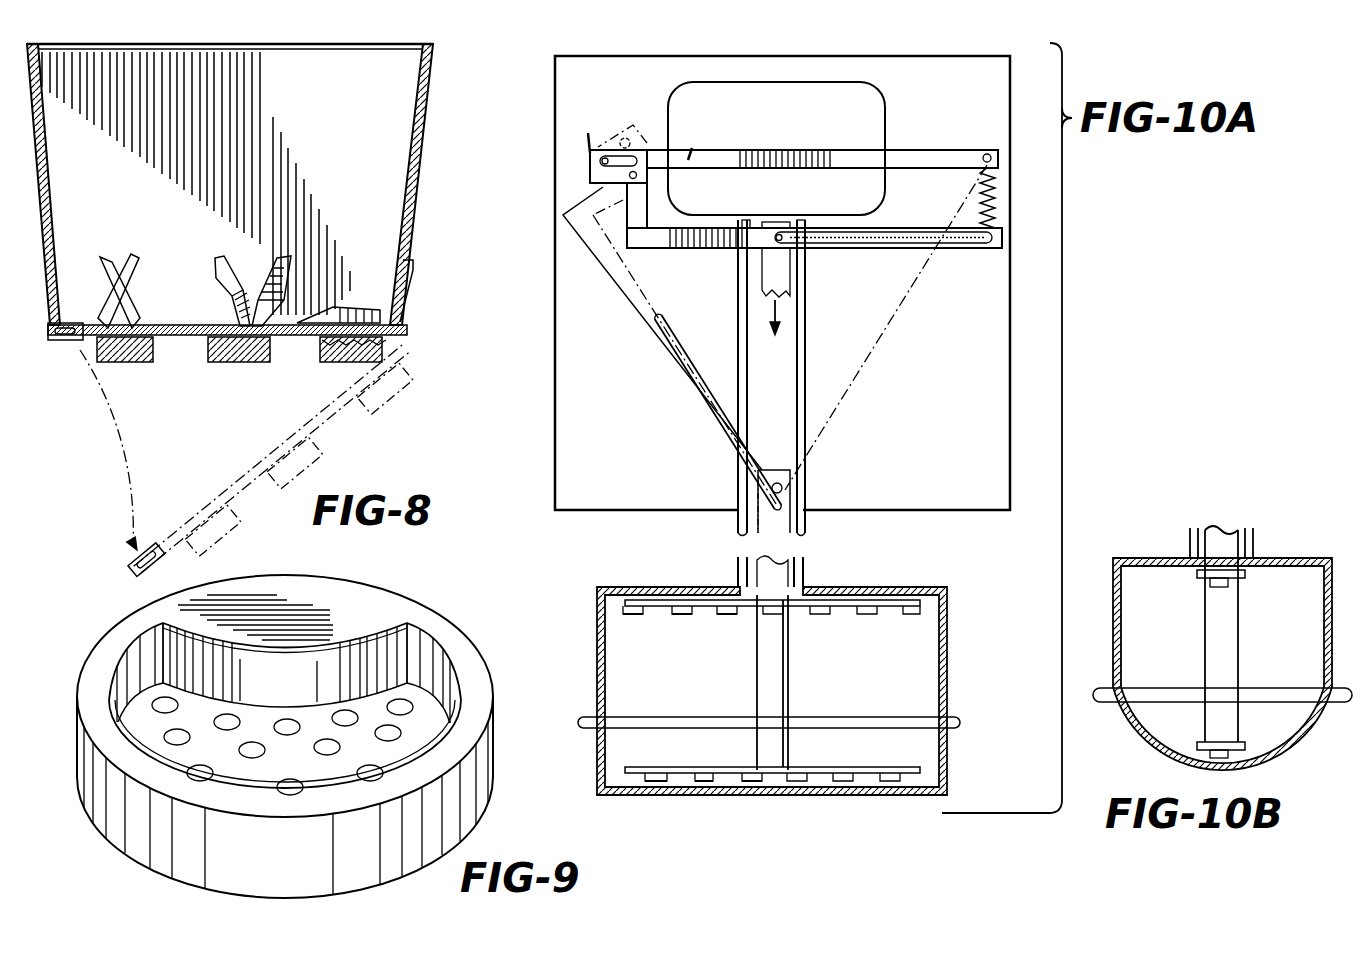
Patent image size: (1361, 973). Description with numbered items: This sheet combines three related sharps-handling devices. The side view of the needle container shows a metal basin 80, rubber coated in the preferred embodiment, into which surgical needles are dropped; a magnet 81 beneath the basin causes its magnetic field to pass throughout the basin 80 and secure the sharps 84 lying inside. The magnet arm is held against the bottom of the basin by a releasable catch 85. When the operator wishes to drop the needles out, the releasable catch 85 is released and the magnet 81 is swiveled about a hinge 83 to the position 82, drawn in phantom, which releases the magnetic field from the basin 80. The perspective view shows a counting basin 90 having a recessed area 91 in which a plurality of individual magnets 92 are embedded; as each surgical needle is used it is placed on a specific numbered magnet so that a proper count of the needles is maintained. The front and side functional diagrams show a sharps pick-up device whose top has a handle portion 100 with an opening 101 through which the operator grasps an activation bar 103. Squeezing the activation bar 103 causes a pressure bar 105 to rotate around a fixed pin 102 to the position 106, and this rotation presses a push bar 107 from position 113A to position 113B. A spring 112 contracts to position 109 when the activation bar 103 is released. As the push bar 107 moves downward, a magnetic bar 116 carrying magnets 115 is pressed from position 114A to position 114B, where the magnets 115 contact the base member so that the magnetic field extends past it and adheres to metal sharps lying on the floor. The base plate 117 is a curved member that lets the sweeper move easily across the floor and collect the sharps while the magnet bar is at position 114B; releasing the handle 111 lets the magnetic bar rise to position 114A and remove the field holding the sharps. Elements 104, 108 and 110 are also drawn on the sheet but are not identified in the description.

In FIG. 8, the metal basin 80 is at (433, 64).
In FIG. 8, the magnet 81 is at (140, 362).
In FIG. 8, the swiveled position of magnet 82 is at (255, 478).
In FIG. 8, the hinge 83 is at (412, 333).
In FIG. 8, the sharps 84 is at (208, 272).
In FIG. 8, the releasable catch 85 is at (60, 342).
In FIG. 9, the basin 90 is at (412, 720).
In FIG. 9, the recessed area 91 is at (372, 622).
In FIG. 9, the individual magnets 92 is at (227, 745).
In FIG. 10A, the handle portion 100 is at (1010, 73).
In FIG. 10A, the opening 101 is at (806, 112).
In FIG. 10A, the fixed pin 102 is at (658, 178).
In FIG. 10A, the activation bar 103 is at (692, 148).
In FIG. 10A, the pin 104 is at (588, 133).
In FIG. 10A, the pressure bar 105 is at (683, 248).
In FIG. 10A, the rotated position of pressure bar 106 is at (660, 352).
In FIG. 10A, the push bar 107 is at (808, 262).
In FIG. 10A, the direction of movement 108 is at (785, 305).
In FIG. 10A, the contracted spring position 109 is at (996, 206).
In FIG. 10A, the pivot 110 is at (995, 152).
In FIG. 10A, the handle 111 is at (940, 153).
In FIG. 10A, the spring 112 is at (866, 372).
In FIG. 10A, the upper position of push bar 113A is at (785, 232).
In FIG. 10A, the lower position of push bar 113B is at (792, 490).
In FIG. 10A, the raised position of magnetic bar 114A is at (848, 608).
In FIG. 10B, the raised position of magnetic bar 114A is at (1245, 585).
In FIG. 10A, the lowered position of magnetic bar 114B is at (705, 767).
In FIG. 10B, the lowered position of magnetic bar 114B is at (1250, 748).
In FIG. 10A, the magnets 115 is at (712, 614).
In FIG. 10A, the magnetic bar 116 is at (900, 587).
In FIG. 10A, the base plate 117 is at (830, 795).
In FIG. 10B, the base plate 117 is at (1145, 738).